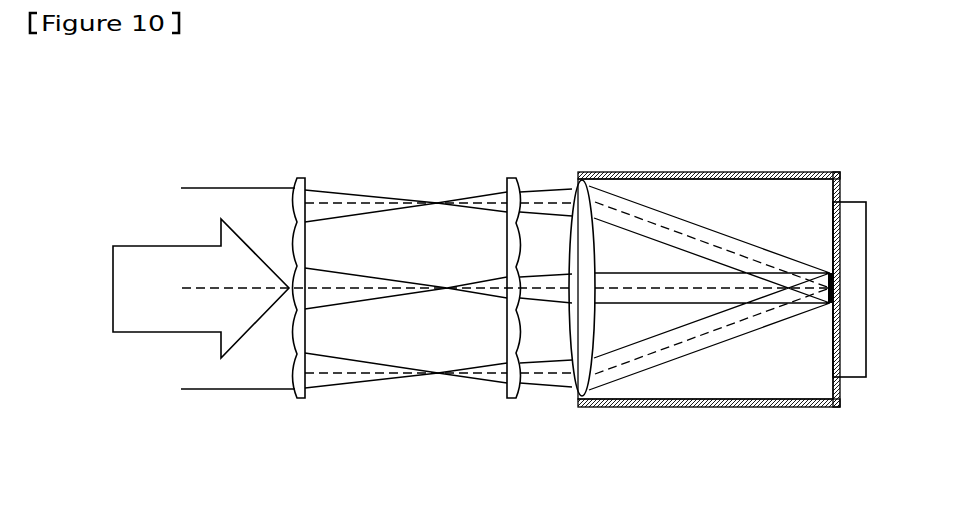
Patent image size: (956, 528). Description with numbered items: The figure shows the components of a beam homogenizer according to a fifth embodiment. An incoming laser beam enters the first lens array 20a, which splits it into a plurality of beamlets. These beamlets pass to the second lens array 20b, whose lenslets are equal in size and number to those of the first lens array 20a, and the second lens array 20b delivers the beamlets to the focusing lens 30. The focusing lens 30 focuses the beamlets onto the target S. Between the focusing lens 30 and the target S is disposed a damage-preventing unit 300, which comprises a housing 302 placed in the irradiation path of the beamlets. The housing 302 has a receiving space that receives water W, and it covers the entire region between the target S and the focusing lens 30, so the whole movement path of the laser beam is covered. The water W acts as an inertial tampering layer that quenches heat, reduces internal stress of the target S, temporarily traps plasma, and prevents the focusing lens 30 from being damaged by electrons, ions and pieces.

The first lens array 20a is at (304, 398).
The second lens array 20b is at (506, 397).
The focusing lens 30 is at (574, 385).
The damage-preventing unit 300 is at (708, 272).
The housing 302 is at (716, 173).
The target S is at (852, 202).
The water W is at (803, 362).